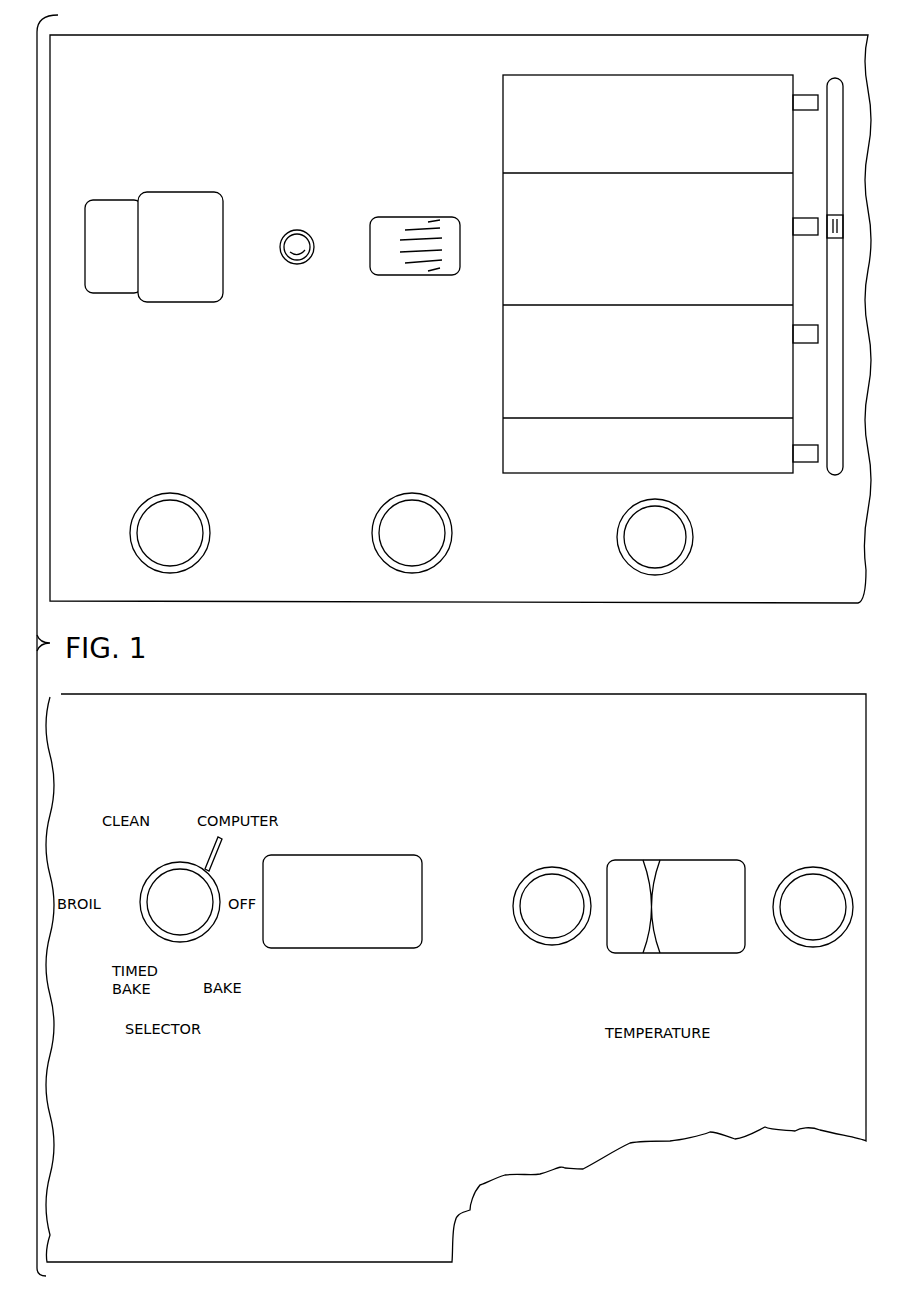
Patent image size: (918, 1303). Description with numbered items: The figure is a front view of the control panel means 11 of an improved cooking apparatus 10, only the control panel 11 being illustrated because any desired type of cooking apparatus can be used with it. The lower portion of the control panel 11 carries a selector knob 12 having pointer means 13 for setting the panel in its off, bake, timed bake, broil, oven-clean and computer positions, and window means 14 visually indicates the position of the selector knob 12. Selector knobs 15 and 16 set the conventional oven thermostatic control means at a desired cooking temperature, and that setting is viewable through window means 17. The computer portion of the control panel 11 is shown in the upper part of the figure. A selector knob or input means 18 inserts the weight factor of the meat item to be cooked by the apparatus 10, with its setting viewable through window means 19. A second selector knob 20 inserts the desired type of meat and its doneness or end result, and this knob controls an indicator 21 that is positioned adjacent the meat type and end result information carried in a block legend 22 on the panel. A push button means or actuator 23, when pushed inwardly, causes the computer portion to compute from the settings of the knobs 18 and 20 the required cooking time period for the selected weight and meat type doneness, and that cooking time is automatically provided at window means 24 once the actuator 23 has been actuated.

The cooking apparatus 10 is at (162, 26).
The control panel means 11 is at (637, 50).
The selector knob 12 is at (163, 885).
The pointer means 13 is at (218, 853).
The window means 14 is at (340, 858).
The selector knob 15 is at (558, 882).
The selector knob 16 is at (800, 885).
The window means 17 is at (688, 866).
The selector knob or input means 18 is at (432, 532).
The window means 19 is at (388, 216).
The selector knob 20 is at (668, 534).
The indicator 21 is at (840, 222).
The block legend 22 is at (764, 76).
The push button means or actuator 23 is at (187, 530).
The window means 24 is at (185, 191).